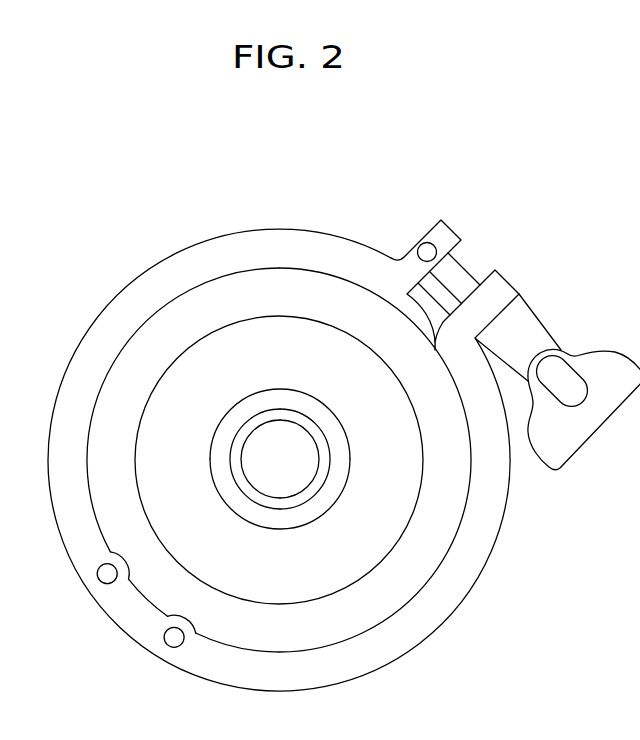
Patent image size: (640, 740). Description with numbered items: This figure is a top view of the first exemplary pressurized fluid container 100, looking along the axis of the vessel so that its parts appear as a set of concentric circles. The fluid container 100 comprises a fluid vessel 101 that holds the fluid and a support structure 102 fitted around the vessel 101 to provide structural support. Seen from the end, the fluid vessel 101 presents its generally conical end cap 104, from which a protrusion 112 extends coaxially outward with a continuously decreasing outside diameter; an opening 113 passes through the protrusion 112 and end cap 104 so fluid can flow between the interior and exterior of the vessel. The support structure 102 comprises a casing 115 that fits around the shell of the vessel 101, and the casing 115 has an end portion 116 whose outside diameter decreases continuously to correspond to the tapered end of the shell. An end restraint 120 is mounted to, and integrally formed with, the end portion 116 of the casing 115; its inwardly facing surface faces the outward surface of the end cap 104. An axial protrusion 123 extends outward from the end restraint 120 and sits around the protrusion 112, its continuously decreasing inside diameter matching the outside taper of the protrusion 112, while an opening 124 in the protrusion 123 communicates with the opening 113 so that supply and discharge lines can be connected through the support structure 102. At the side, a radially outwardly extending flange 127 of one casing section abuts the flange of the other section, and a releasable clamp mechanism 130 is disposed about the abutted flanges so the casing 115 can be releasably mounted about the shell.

The fluid container 100 is at (504, 204).
The fluid vessel 101 is at (297, 417).
The support structure 102 is at (338, 234).
The end cap 104 is at (250, 414).
The protrusion 112 is at (243, 485).
The opening 113 is at (283, 497).
The casing 115 is at (128, 397).
The first end portion of the casing 116 is at (201, 330).
The end restraint 120 is at (396, 446).
The axial protrusion 123 is at (327, 497).
The opening 124 is at (229, 460).
The flange 127 is at (420, 300).
The releasable clamp mechanism 130 is at (536, 322).